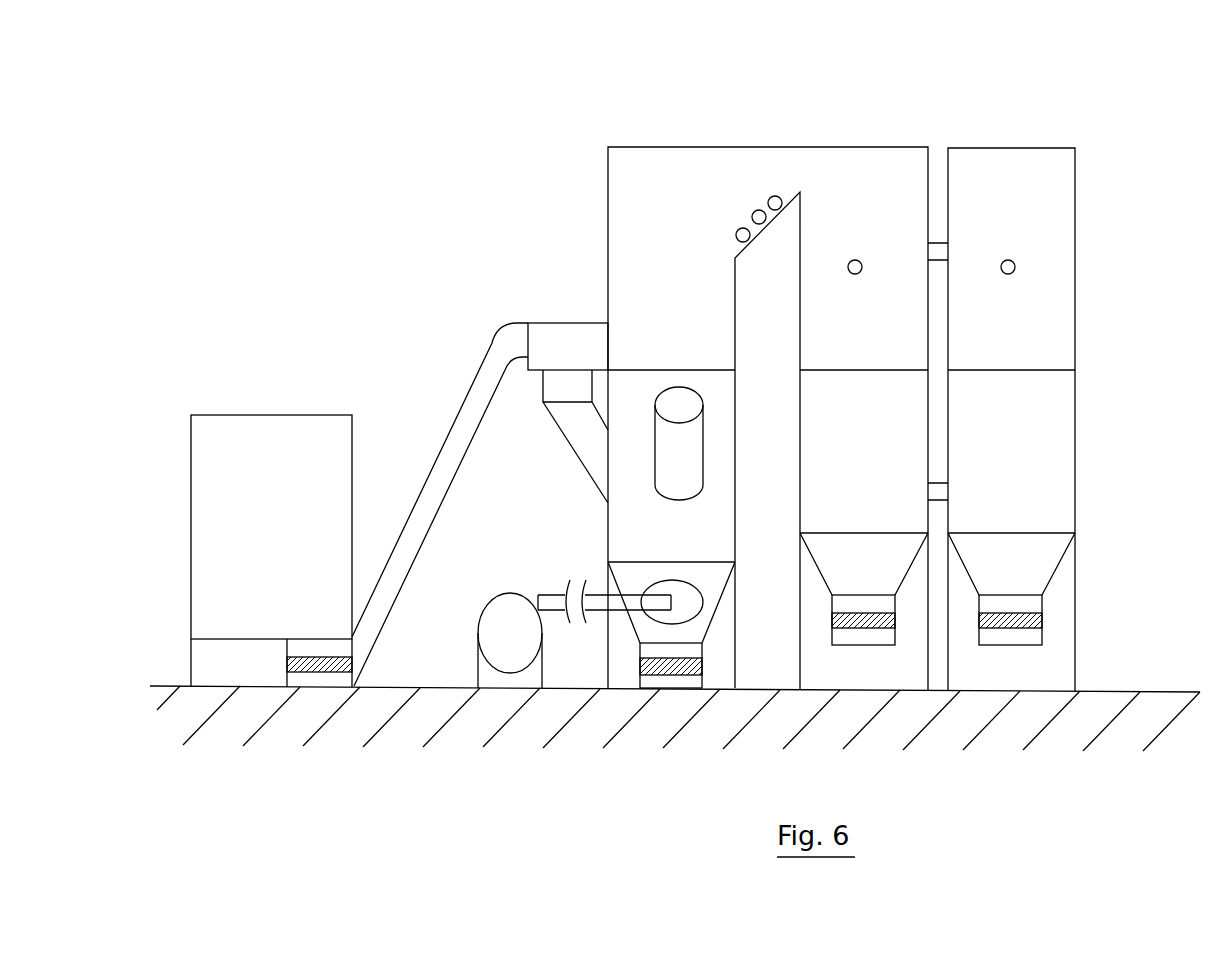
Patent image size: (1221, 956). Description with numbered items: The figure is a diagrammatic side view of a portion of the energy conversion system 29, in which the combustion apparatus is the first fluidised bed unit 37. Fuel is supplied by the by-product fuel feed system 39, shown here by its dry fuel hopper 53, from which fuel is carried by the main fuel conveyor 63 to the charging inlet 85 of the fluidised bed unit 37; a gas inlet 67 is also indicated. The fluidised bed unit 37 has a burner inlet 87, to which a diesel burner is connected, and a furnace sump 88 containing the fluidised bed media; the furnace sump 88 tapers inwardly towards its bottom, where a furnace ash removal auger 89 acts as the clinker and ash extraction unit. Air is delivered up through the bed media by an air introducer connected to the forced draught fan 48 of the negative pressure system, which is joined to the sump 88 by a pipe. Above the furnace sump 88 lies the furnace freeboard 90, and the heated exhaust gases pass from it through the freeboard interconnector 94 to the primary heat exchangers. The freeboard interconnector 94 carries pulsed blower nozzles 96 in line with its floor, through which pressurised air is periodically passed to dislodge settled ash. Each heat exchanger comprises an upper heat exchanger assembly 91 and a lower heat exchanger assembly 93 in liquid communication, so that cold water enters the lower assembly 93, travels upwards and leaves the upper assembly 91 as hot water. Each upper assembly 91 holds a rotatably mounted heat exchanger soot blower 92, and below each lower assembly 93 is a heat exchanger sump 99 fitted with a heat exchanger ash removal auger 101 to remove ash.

The energy conversion system 29 is at (285, 153).
The first fluidised bed unit 37 is at (566, 151).
The by-product fuel feed system 39 is at (283, 350).
The forced draught fan 48 is at (502, 675).
The dry fuel hopper 53 is at (289, 519).
The main fuel conveyor 63 is at (476, 378).
The gas inlet 67 is at (1160, 94).
The charging inlet 85 is at (607, 460).
The burner inlet 87 is at (318, 668).
The furnace sump 88 is at (713, 618).
The furnace ash removal auger 89 is at (660, 672).
The furnace freeboard 90 is at (691, 336).
The upper heat exchanger assembly 91 is at (884, 336).
The heat exchanger soot blower 92 is at (855, 260).
The lower heat exchanger assembly 93 is at (882, 453).
The freeboard interconnector 94 is at (792, 173).
The pulsed blower nozzles 96 is at (743, 228).
The heat exchanger sump 99 is at (905, 577).
The heat exchanger ash removal auger 101 is at (858, 628).